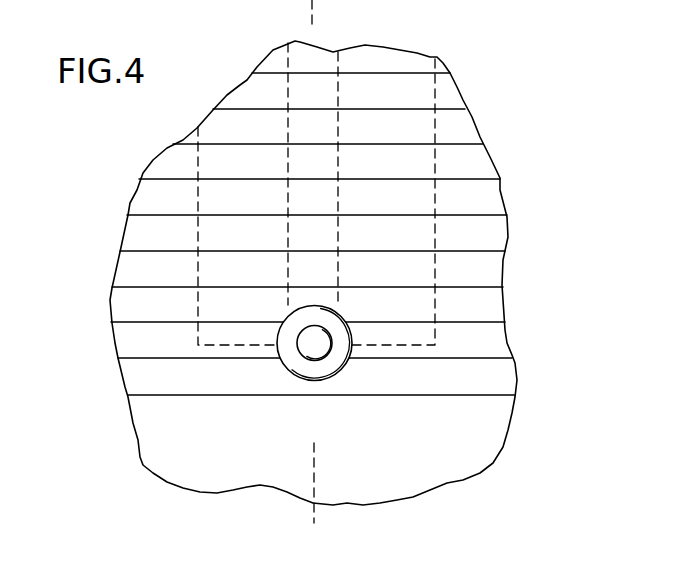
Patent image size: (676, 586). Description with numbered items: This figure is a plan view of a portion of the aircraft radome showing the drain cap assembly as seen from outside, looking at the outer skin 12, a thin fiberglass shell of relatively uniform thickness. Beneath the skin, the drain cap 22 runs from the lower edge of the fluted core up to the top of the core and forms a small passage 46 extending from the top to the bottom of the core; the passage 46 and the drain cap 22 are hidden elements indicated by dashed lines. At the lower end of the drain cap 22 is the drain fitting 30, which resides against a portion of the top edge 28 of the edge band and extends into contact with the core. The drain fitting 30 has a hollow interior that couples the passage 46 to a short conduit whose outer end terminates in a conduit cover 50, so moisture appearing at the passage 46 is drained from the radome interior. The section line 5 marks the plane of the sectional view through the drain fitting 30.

The outer skin 12 is at (478, 452).
The drain cap 22 is at (198, 345).
The top edge 28 is at (498, 393).
The drain fitting 30 is at (280, 358).
The passage 46 is at (327, 232).
The conduit cover 50 is at (308, 368).
The section line 5- 5 is at (310, 520).